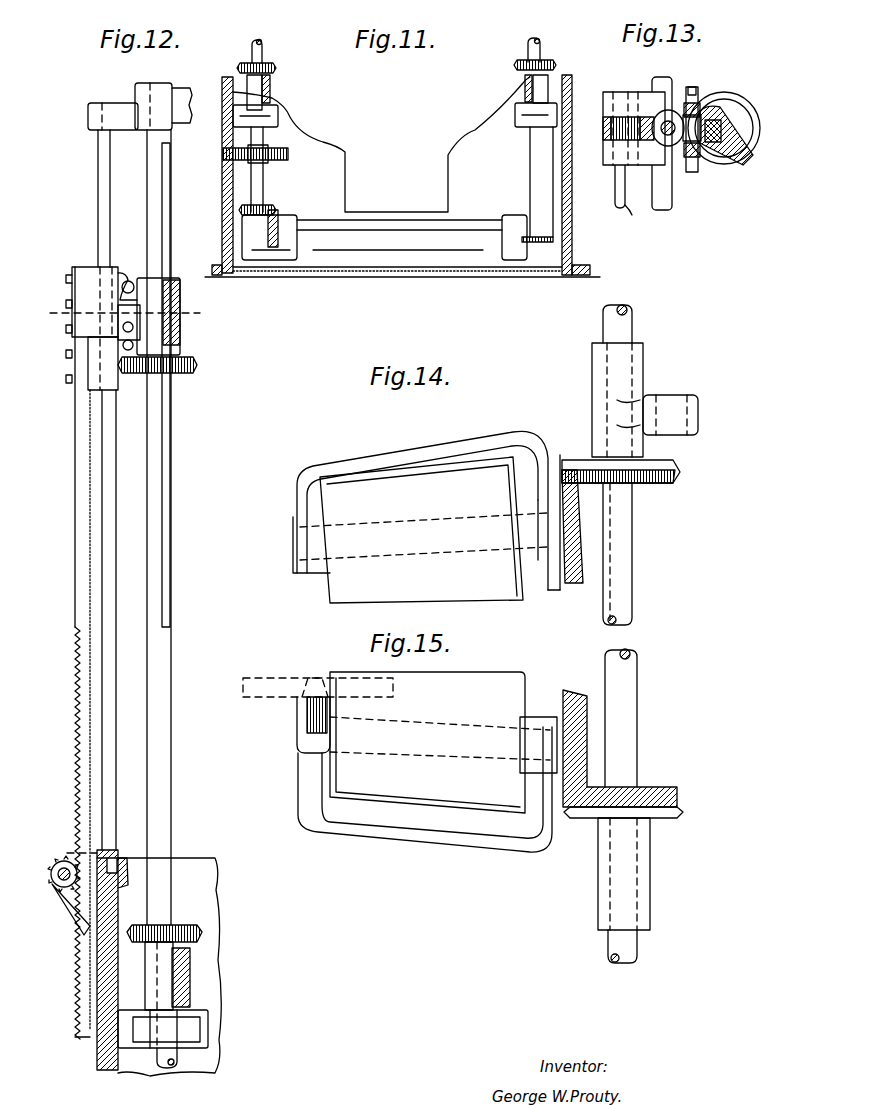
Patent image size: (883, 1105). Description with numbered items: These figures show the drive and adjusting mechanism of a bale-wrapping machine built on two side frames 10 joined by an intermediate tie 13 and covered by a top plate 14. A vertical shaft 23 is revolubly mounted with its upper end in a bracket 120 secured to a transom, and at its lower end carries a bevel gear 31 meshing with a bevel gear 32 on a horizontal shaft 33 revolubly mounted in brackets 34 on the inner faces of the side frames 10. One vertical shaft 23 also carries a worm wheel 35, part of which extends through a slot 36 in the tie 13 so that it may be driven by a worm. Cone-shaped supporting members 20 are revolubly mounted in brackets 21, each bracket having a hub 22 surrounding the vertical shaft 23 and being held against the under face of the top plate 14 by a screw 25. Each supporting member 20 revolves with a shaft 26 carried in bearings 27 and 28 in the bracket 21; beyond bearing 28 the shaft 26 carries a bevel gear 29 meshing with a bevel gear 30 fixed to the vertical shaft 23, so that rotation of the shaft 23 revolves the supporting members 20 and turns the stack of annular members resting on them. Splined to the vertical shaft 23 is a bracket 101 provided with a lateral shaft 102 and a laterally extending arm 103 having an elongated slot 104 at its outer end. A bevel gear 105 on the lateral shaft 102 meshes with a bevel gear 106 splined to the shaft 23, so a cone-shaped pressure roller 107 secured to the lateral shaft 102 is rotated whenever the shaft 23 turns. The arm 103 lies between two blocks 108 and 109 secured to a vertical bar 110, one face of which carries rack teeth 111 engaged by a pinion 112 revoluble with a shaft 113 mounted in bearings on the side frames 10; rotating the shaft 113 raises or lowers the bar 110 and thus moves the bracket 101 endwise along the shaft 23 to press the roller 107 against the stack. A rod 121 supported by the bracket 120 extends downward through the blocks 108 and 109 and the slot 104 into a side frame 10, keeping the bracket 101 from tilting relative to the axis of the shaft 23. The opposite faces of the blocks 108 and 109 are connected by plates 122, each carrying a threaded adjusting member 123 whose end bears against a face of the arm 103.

In FIG. 12, the side frames 10 is at (105, 1048).
In FIG. 11, the side frames 10 is at (222, 135).
In FIG. 13, the side frames 10 is at (591, 171).
In FIG. 12, the intermediate tie 13 is at (120, 313).
In FIG. 11, the intermediate tie 13 is at (333, 140).
In FIG. 15, the top plate 14 is at (258, 678).
In FIG. 15, the supporting members 20 is at (495, 680).
In FIG. 12, the brackets 21 is at (190, 958).
In FIG. 11, the brackets 21 is at (271, 85).
In FIG. 15, the brackets 21 is at (327, 820).
In FIG. 12, the hub 22 is at (160, 982).
In FIG. 11, the hub 22 is at (246, 80).
In FIG. 12, the vertical shaft 23 is at (163, 243).
In FIG. 11, the vertical shaft 23 is at (262, 45).
In FIG. 13, the vertical shaft 23 is at (715, 150).
In FIG. 14, the vertical shaft 23 is at (617, 465).
In FIG. 15, the vertical shaft 23 is at (637, 718).
In FIG. 15, the screw 25 is at (315, 678).
In FIG. 15, the shaft 26 is at (408, 753).
In FIG. 15, the bearing 27 is at (297, 740).
In FIG. 15, the bearing 28 is at (538, 717).
In FIG. 15, the bevel gear 29 is at (575, 690).
In FIG. 12, the bevel gear 30 is at (198, 932).
In FIG. 11, the bevel gear 30 is at (276, 68).
In FIG. 15, the bevel gear 30 is at (678, 800).
In FIG. 11, the bevel gear 31 is at (228, 210).
In FIG. 11, the bevel gear 32 is at (278, 212).
In FIG. 11, the horizontal shaft 33 is at (400, 222).
In FIG. 11, the brackets 34 is at (285, 260).
In FIG. 11, the worm wheel 35 is at (288, 155).
In FIG. 11, the slot 36 is at (270, 148).
In FIG. 13, the bracket 101 is at (752, 160).
In FIG. 14, the bracket 101 is at (298, 473).
In FIG. 14, the lateral shaft 102 is at (350, 560).
In FIG. 14, the arm 103 is at (700, 416).
In FIG. 13, the elongated slot 104 is at (672, 110).
In FIG. 14, the elongated slot 104 is at (664, 400).
In FIG. 14, the bevel gear 105 is at (578, 583).
In FIG. 13, the bevel gear 106 is at (735, 104).
In FIG. 14, the bevel gear 106 is at (660, 478).
In FIG. 14, the pressure roller 107 is at (503, 603).
In FIG. 12, the block 108 is at (92, 267).
In FIG. 12, the block 109 is at (93, 377).
In FIG. 12, the vertical bar 110 is at (75, 495).
In FIG. 12, the rack teeth 111 is at (75, 785).
In FIG. 13, the rack teeth 111 is at (637, 92).
In FIG. 12, the pinion 112 is at (66, 858).
In FIG. 13, the pinion 112 is at (608, 130).
In FIG. 12, the shaft 113 is at (58, 898).
In FIG. 13, the shaft 113 is at (632, 212).
In FIG. 12, the bracket 120 is at (126, 103).
In FIG. 12, the rod 121 is at (98, 178).
In FIG. 13, the rod 121 is at (640, 172).
In FIG. 12, the plates 122 is at (122, 273).
In FIG. 13, the plates 122 is at (690, 105).
In FIG. 12, the adjusting member 123 is at (115, 333).
In FIG. 13, the adjusting member 123 is at (700, 88).